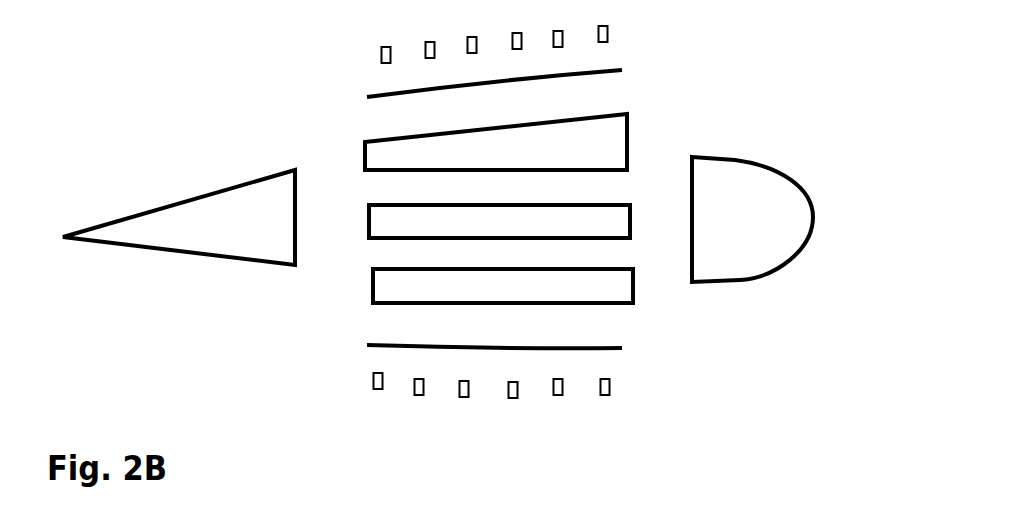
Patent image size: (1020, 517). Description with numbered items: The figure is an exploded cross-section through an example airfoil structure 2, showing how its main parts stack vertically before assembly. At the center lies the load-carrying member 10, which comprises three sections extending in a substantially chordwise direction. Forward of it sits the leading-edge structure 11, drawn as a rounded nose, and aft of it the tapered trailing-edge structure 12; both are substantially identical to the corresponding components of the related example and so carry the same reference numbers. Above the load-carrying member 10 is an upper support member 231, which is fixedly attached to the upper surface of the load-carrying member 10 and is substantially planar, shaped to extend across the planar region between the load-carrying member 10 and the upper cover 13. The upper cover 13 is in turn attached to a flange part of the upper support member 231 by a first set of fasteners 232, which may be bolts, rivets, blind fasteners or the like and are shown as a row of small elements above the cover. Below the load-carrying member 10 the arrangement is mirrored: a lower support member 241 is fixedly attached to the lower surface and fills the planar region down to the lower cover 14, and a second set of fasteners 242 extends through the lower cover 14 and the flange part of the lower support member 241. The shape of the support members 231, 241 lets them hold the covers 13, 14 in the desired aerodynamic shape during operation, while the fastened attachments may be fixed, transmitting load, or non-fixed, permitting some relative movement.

The airfoil structure 2 is at (187, 100).
The load-carrying member 10 is at (437, 222).
The leading-edge structure 11 is at (767, 213).
The trailing-edge structure 12 is at (212, 222).
The upper cover 13 is at (597, 67).
The lower cover 14 is at (607, 352).
The upper support member 231 is at (600, 137).
The first set of fasteners 232 is at (427, 43).
The lower support member 241 is at (415, 288).
The second set of fasteners 242 is at (601, 393).